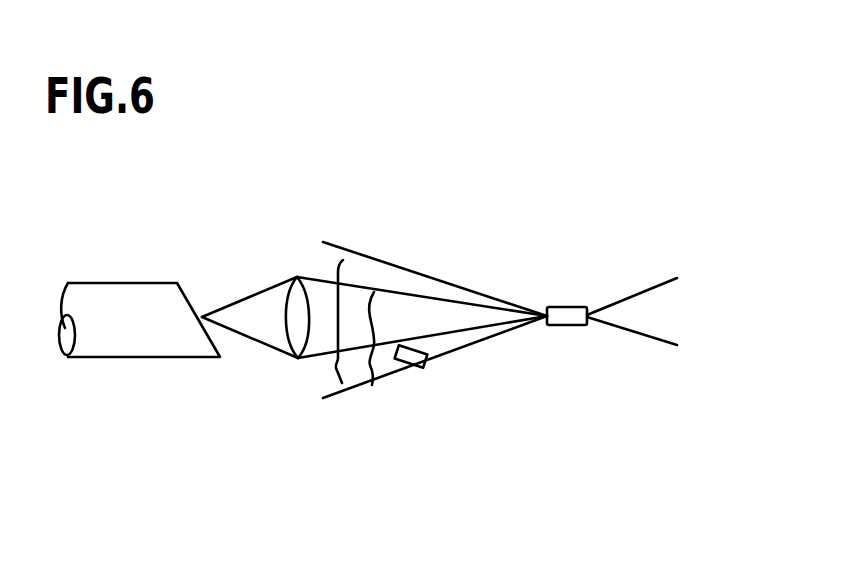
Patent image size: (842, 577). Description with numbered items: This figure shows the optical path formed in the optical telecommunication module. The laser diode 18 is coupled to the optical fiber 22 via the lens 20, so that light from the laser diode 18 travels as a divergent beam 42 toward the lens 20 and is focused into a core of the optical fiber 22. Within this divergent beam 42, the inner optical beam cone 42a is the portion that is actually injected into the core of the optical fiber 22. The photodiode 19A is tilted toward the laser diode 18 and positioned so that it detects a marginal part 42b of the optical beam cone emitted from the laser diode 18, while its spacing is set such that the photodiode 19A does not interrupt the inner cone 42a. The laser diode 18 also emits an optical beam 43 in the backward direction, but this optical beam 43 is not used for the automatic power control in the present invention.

The optical fiber 22 is at (120, 352).
The lens 20 is at (296, 277).
The divergent beam 42 is at (337, 363).
The optical beam cone 42a is at (368, 313).
The marginal part 42b is at (372, 385).
The photodiode 19A is at (409, 364).
The laser diode 18 is at (567, 307).
The optical beam 43 is at (676, 278).